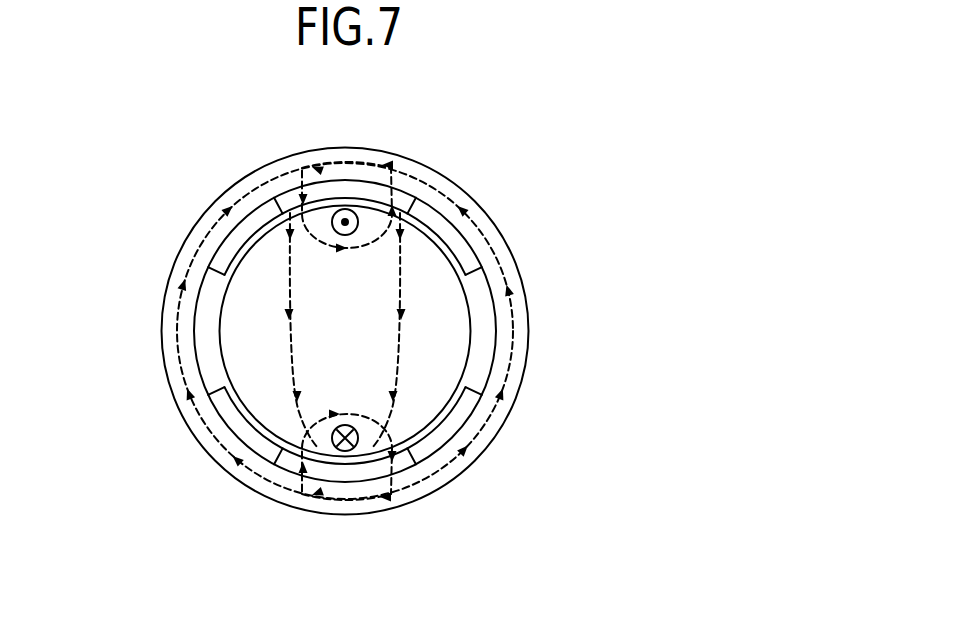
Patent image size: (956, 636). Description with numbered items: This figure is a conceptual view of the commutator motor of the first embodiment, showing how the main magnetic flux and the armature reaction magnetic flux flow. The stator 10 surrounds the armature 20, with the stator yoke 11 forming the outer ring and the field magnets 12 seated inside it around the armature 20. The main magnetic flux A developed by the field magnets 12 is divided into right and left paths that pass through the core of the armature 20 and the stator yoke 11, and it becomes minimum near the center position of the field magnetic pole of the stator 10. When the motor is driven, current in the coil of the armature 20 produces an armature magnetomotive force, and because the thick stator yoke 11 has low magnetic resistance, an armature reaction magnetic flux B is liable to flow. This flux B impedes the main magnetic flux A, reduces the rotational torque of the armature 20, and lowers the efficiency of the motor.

The stator 10 is at (387, 334).
The stator yoke 11 is at (524, 325).
The field magnet 12 is at (465, 250).
The armature 20 is at (435, 345).
The main magnetic flux A is at (486, 207).
The armature reaction magnetic flux B is at (358, 150).